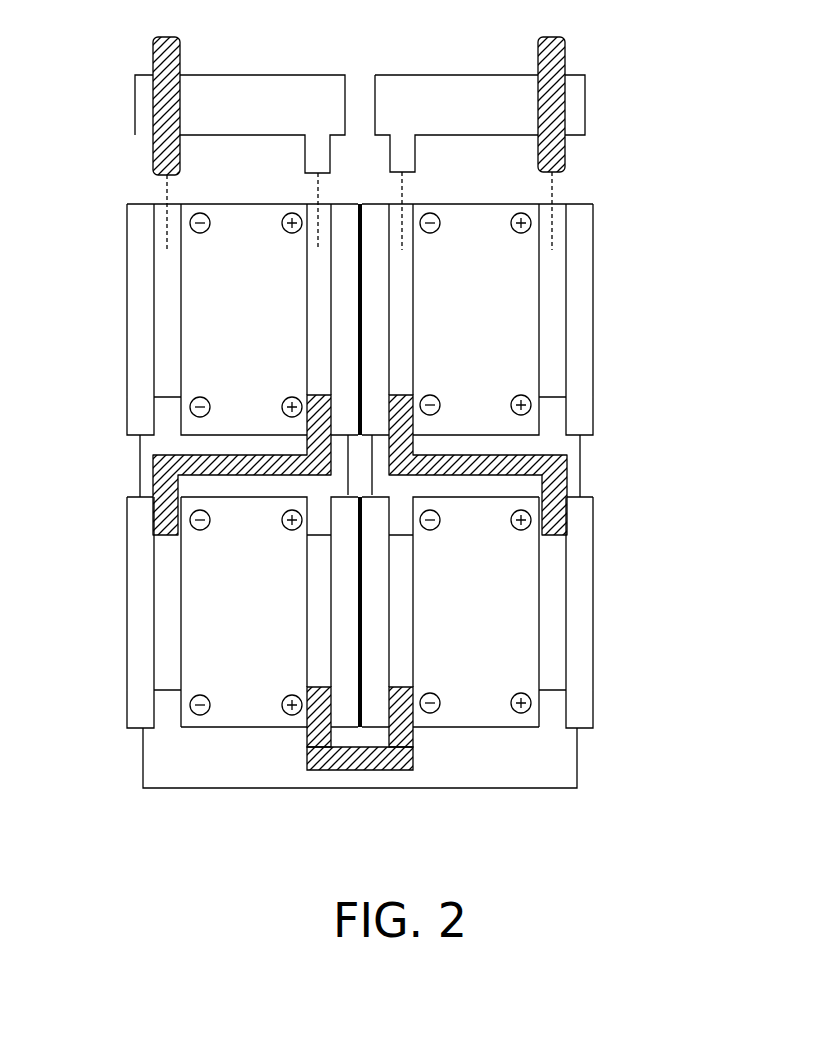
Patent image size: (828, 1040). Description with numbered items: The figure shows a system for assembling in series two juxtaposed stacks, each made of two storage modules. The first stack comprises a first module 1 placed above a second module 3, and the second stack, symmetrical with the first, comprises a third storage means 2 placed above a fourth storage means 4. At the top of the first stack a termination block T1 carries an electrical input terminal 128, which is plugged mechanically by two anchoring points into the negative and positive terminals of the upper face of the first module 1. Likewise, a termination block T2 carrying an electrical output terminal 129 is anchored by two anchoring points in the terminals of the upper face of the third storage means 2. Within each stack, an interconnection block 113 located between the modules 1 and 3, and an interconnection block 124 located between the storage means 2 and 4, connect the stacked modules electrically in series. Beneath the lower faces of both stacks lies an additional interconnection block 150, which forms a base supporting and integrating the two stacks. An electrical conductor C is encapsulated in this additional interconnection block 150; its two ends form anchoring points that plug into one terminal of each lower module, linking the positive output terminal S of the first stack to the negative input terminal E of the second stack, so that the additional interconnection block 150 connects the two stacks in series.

The first module 1 is at (127, 316).
The third storage means 2 is at (595, 313).
The second module 3 is at (127, 602).
The fourth storage means 4 is at (595, 598).
The interconnection block 113 is at (138, 462).
The interconnection block 124 is at (580, 464).
The electrical input terminal 128 is at (153, 50).
The electrical output terminal 129 is at (565, 43).
The termination block T1 is at (133, 104).
The termination block T2 is at (582, 98).
The positive output terminal S is at (308, 741).
The electrical conductor C is at (363, 767).
The negative input terminal E is at (398, 692).
The additional interconnection block 150 is at (457, 788).